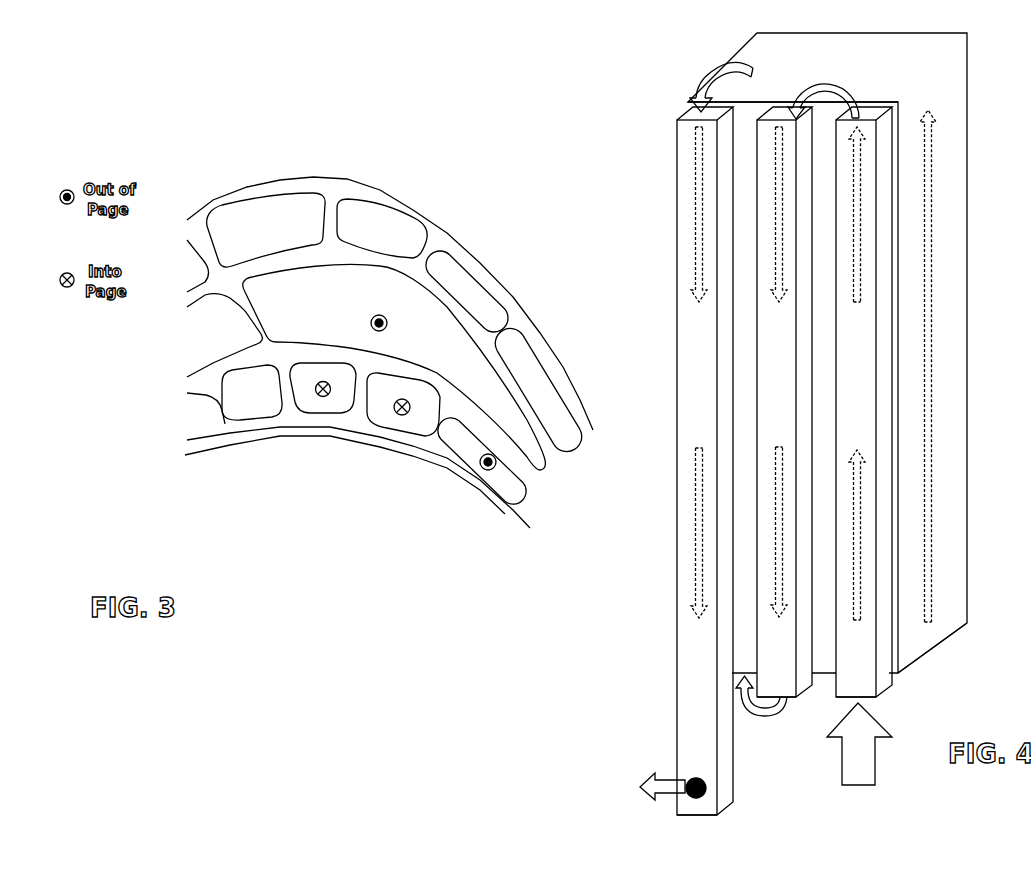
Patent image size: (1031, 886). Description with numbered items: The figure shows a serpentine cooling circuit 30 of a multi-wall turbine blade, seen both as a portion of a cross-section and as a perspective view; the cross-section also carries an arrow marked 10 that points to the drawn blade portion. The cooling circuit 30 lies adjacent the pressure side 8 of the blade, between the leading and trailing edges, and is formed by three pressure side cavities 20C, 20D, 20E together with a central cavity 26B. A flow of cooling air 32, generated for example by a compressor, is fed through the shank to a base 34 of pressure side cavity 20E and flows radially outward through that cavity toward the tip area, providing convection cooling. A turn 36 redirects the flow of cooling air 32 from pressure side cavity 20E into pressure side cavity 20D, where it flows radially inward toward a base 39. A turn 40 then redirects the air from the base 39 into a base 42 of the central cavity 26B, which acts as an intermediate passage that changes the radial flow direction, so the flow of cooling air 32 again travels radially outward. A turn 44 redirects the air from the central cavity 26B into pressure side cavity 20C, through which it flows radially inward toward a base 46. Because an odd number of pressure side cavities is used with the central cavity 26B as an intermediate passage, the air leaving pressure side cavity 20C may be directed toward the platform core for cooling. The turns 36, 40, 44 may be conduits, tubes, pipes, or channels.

In FIG. 3, the pressure side 8 is at (228, 465).
In FIG. 3, the turbine component 10 is at (438, 191).
In FIG. 3, the pressure side cavity 20C is at (300, 414).
In FIG. 4, the pressure side cavity 20C is at (716, 366).
In FIG. 3, the pressure side cavity 20D is at (430, 434).
In FIG. 4, the pressure side cavity 20D is at (795, 366).
In FIG. 3, the pressure side cavity 20E is at (505, 500).
In FIG. 4, the pressure side cavity 20E is at (874, 366).
In FIG. 3, the central cavity 26B is at (324, 293).
In FIG. 4, the central cavity 26B is at (779, 77).
In FIG. 3, the serpentine cooling circuit 30 is at (358, 464).
In FIG. 4, the serpentine cooling circuit 30 is at (747, 430).
In FIG. 3, the flow of cooling air 32 is at (387, 320).
In FIG. 4, the flow of cooling air 32 is at (845, 756).
In FIG. 4, the base of pressure side cavity 20E 34 is at (885, 690).
In FIG. 4, the turn 36 is at (857, 92).
In FIG. 4, the base of pressure side cavity 20D 39 is at (800, 690).
In FIG. 4, the turn 40 is at (758, 714).
In FIG. 4, the base of central cavity 26B 42 is at (957, 632).
In FIG. 4, the turn 44 is at (712, 70).
In FIG. 4, the base of pressure side cavity 20C 46 is at (705, 815).